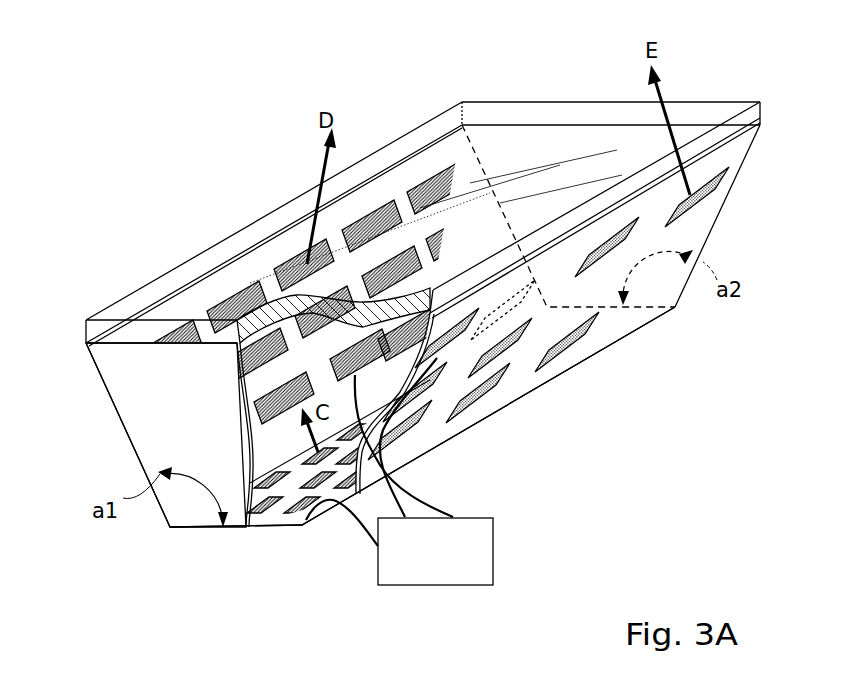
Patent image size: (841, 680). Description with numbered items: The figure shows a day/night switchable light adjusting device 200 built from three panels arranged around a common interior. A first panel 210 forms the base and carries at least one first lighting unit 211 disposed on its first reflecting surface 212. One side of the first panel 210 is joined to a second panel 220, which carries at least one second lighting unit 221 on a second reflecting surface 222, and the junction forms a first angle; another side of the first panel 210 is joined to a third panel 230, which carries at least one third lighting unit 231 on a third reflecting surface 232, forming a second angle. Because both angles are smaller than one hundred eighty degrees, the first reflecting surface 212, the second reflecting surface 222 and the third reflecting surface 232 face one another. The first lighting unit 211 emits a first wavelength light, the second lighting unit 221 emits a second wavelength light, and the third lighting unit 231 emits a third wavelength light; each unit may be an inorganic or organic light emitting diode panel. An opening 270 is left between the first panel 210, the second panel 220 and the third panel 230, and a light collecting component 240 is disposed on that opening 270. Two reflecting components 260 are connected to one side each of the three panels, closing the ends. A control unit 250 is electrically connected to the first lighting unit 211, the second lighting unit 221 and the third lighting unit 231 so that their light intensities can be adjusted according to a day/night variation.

The day/night switchable light adjusting device 200 is at (119, 62).
The first panel 210 is at (251, 530).
The first lighting unit 211 is at (322, 515).
The first reflecting surface 212 is at (276, 528).
The second panel 220 is at (177, 282).
The second lighting unit 221 is at (255, 283).
The second reflecting surface 222 is at (398, 182).
The third panel 230 is at (513, 387).
The third lighting unit 231 is at (573, 370).
The third reflecting surface 232 is at (437, 397).
The light collecting component 240 is at (720, 98).
The control unit 250 is at (399, 471).
The reflecting component 260 is at (122, 398).
The opening 270 is at (527, 150).